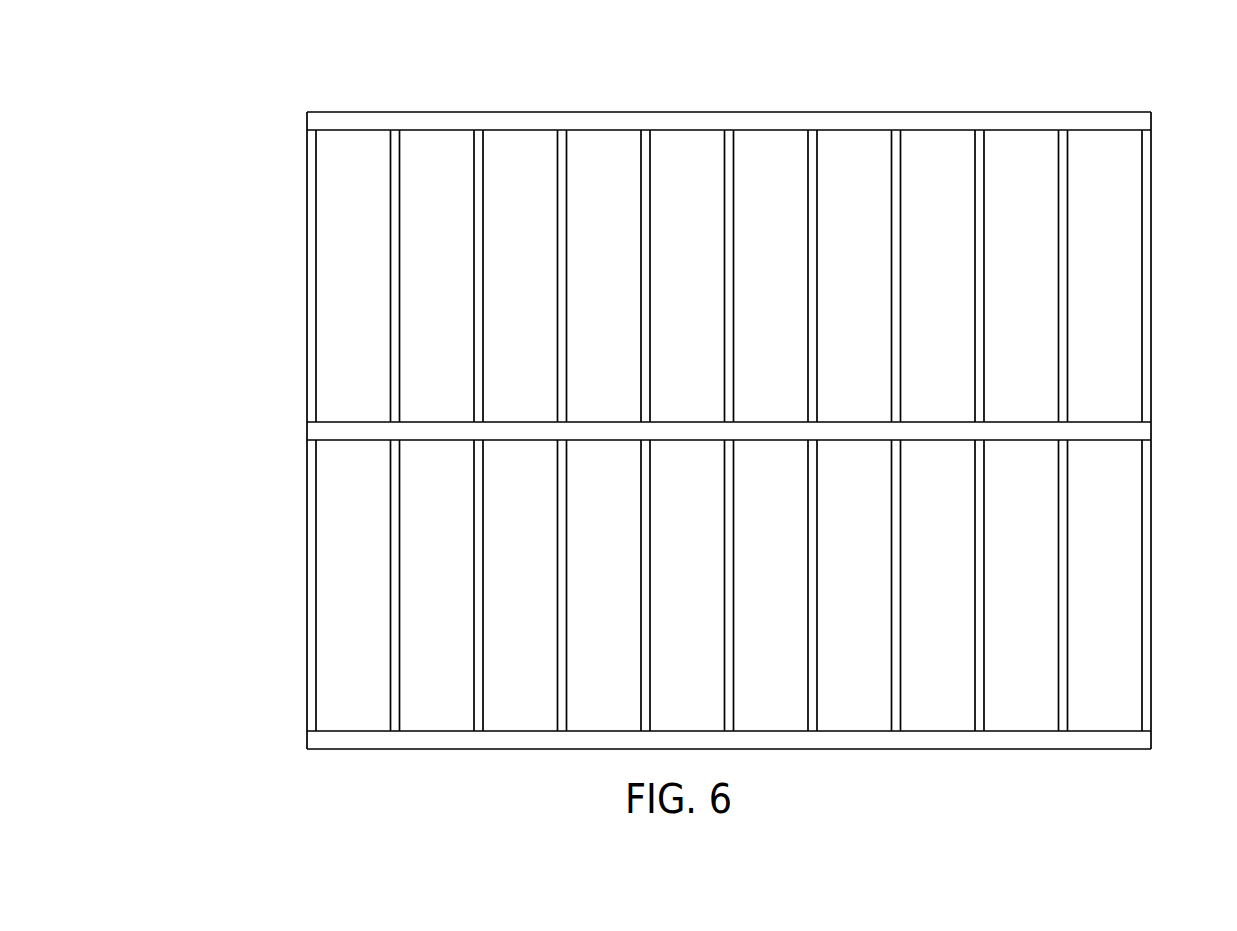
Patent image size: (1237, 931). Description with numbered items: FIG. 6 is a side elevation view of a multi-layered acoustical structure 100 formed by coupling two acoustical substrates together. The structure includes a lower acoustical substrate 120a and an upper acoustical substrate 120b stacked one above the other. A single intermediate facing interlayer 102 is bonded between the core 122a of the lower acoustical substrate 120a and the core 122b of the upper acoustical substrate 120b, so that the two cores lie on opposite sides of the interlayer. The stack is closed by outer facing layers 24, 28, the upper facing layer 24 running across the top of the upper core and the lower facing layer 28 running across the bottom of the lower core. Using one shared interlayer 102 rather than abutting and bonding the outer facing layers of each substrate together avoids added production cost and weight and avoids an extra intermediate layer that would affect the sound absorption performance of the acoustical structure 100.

The multi-layered acoustical structure 100 is at (222, 114).
The outer facing layer 24 is at (982, 112).
The outer facing layer 28 is at (492, 750).
The intermediate facing interlayer 102 is at (1102, 422).
The lower acoustical substrate 120a is at (682, 622).
The upper acoustical substrate 120b is at (683, 228).
The core 122a is at (993, 705).
The core 122b is at (528, 171).